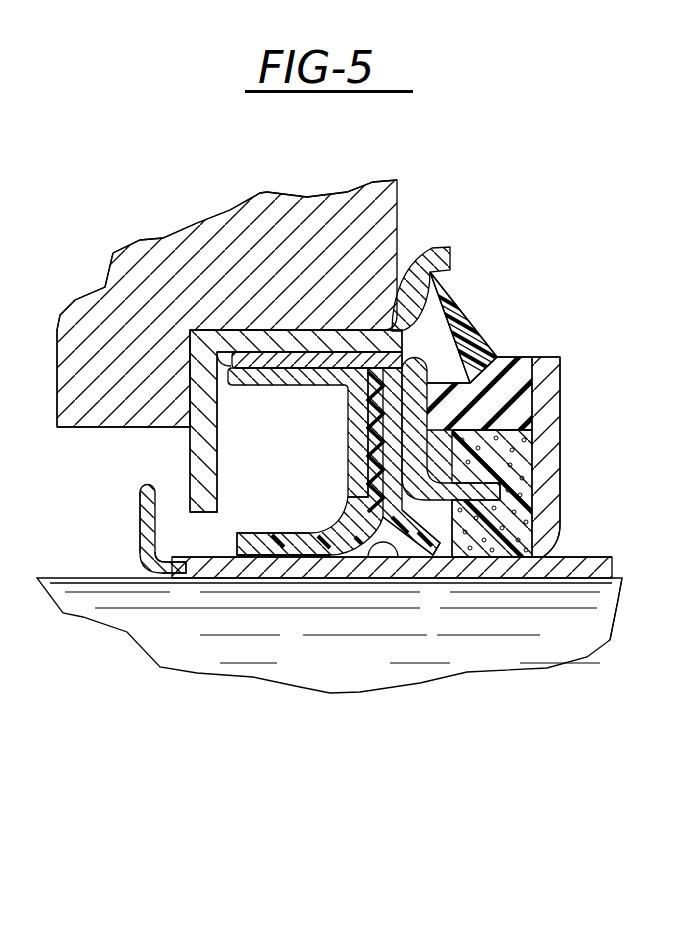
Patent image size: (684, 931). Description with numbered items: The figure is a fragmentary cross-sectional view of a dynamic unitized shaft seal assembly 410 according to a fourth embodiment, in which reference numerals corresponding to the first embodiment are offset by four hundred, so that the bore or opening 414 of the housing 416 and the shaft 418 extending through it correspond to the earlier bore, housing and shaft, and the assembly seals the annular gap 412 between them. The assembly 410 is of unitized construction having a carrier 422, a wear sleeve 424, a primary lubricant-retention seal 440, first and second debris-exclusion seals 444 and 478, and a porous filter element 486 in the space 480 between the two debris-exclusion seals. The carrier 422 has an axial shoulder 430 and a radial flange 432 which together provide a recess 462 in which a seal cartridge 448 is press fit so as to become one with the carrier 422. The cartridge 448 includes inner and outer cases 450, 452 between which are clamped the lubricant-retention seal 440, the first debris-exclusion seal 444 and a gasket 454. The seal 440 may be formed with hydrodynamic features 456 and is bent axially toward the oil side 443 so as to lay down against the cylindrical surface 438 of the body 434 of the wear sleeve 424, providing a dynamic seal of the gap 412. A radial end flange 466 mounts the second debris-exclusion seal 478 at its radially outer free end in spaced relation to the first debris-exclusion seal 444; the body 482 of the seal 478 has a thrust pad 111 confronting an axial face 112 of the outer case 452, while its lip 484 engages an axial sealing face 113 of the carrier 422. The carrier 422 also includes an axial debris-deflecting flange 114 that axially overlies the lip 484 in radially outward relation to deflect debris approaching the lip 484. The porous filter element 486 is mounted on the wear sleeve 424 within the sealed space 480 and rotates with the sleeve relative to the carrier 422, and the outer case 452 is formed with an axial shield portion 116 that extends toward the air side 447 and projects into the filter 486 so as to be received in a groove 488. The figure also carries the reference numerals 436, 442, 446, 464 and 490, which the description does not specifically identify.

The shaft seal assembly 410 is at (607, 250).
The gap 412 is at (80, 440).
The bore or opening 414 is at (115, 427).
The housing 416 is at (127, 267).
The shaft 418 is at (73, 613).
The carrier 422 is at (228, 340).
The wear sleeve 424 is at (243, 557).
The axial shoulder 430 is at (220, 318).
The radial flange 432 is at (198, 445).
The body 434 is at (177, 567).
The plate edge 436 is at (183, 557).
The cylindrical surface 438 is at (370, 557).
The primary lubricant-retention seal 440 is at (377, 417).
The seal base 442 is at (283, 540).
The oil side 443 is at (103, 525).
The first debris-exclusion seal 444 is at (368, 462).
The seal lip 446 is at (413, 557).
The air side 447 is at (633, 502).
The seal cartridge 448 is at (262, 340).
The inner case 450 is at (293, 360).
The outer case 452 is at (307, 362).
The gasket 454 is at (402, 356).
The hydrodynamic features 456 is at (307, 557).
The recess 462 is at (190, 335).
The housing 464 is at (560, 465).
The radial end flange 466 is at (558, 440).
The second debris-exclusion seal 478 is at (533, 344).
The space 480 is at (457, 547).
The body 482 is at (517, 380).
The lip 484 is at (447, 383).
The porous filter element 486 is at (577, 590).
The groove 488 is at (522, 534).
The clip 490 is at (141, 512).
The thrust pad 111 is at (466, 348).
The axial face 112 is at (527, 403).
The axial sealing face 113 is at (452, 322).
The axial debris-deflecting flange 114 is at (430, 253).
The axial shield portion 116 is at (525, 492).